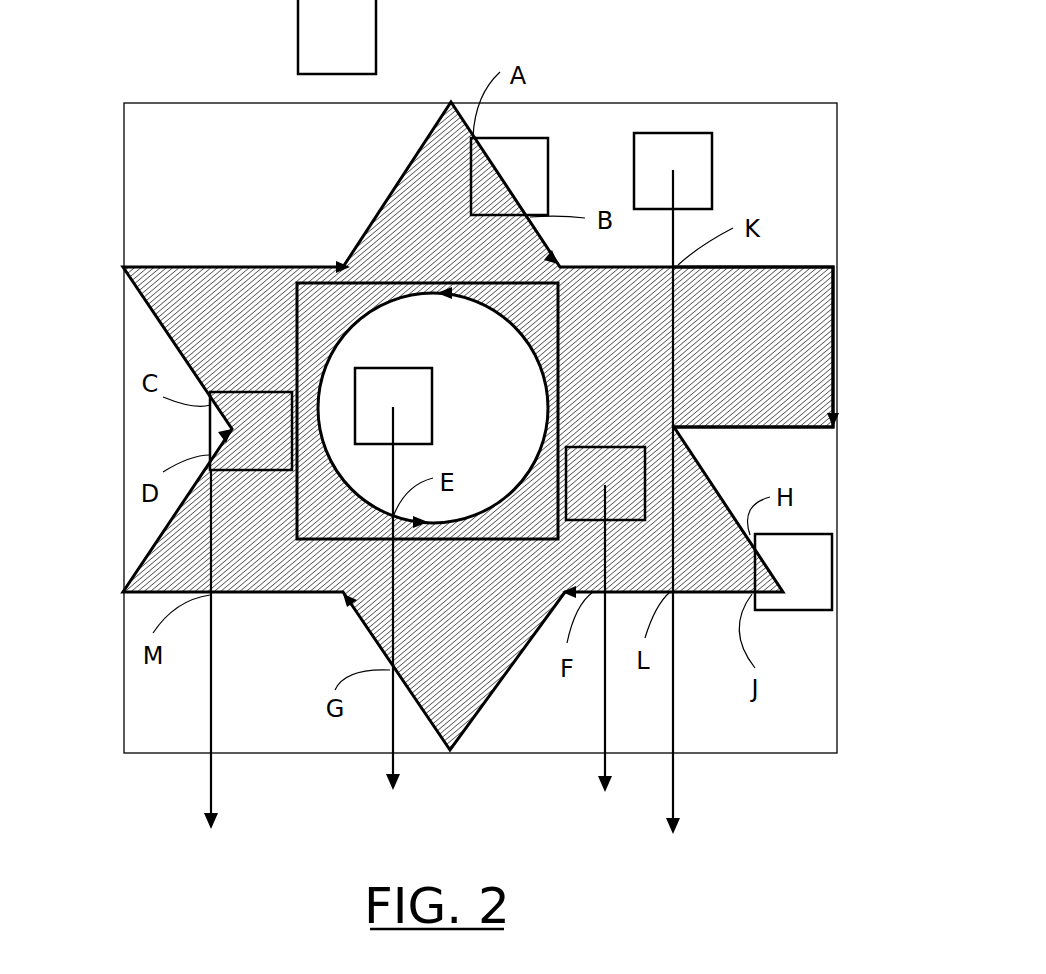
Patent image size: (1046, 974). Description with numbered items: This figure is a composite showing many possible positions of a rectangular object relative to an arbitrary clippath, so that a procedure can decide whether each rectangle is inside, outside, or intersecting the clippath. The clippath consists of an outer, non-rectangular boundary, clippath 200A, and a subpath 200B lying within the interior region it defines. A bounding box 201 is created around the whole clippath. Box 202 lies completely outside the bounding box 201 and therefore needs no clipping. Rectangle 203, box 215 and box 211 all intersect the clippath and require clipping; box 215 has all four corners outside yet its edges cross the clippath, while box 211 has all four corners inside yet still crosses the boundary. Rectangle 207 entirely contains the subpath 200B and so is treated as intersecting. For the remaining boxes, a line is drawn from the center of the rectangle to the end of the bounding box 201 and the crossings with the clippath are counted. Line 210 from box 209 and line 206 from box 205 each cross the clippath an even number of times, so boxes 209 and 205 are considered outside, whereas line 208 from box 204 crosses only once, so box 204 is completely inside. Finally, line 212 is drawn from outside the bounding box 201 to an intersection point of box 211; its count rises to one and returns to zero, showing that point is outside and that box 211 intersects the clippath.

The bounding box 201 is at (837, 170).
The box 202 is at (377, 37).
The rectangle 203 is at (548, 157).
The box 204 is at (645, 462).
The box 205 is at (392, 368).
The line 206 is at (393, 732).
The rectangle 207 is at (287, 497).
The line 208 is at (602, 717).
The box 209 is at (676, 133).
The line 210 is at (673, 783).
The box 211 is at (210, 433).
The line 212 is at (211, 660).
The box 215 is at (792, 612).
The clippath 200A is at (833, 345).
The subpath 200B is at (322, 370).